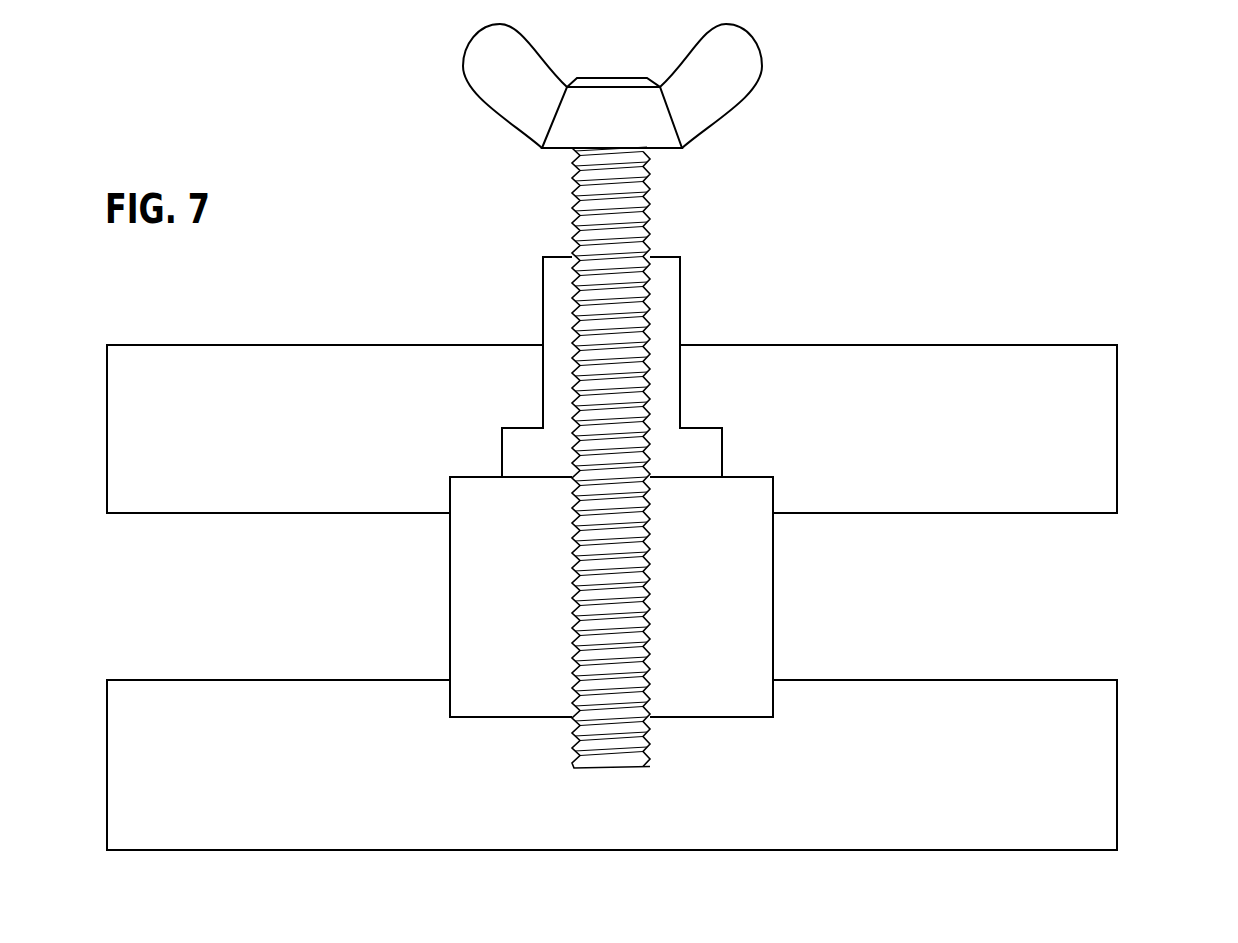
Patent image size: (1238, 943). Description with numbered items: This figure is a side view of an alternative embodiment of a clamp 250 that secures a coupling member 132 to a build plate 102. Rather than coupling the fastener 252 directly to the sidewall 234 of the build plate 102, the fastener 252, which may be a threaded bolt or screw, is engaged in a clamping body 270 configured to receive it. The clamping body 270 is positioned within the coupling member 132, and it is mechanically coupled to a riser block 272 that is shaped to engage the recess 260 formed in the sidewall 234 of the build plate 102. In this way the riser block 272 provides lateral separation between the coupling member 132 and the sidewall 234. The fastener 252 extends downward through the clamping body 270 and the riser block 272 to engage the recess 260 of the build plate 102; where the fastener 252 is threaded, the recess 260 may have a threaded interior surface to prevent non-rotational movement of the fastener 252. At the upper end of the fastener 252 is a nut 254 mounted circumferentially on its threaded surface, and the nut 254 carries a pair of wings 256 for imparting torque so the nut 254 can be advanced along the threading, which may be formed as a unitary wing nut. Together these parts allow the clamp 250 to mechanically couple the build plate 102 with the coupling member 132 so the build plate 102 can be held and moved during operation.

The build plate 102 is at (1130, 727).
The coupling member 132 is at (162, 482).
The sidewall 234 is at (155, 680).
The clamp 250 is at (670, 183).
The fastener 252 is at (603, 207).
The nut 254 is at (615, 78).
The wings 256 is at (710, 75).
The recess 260 is at (742, 700).
The clamping body 270 is at (702, 428).
The riser block 272 is at (490, 583).